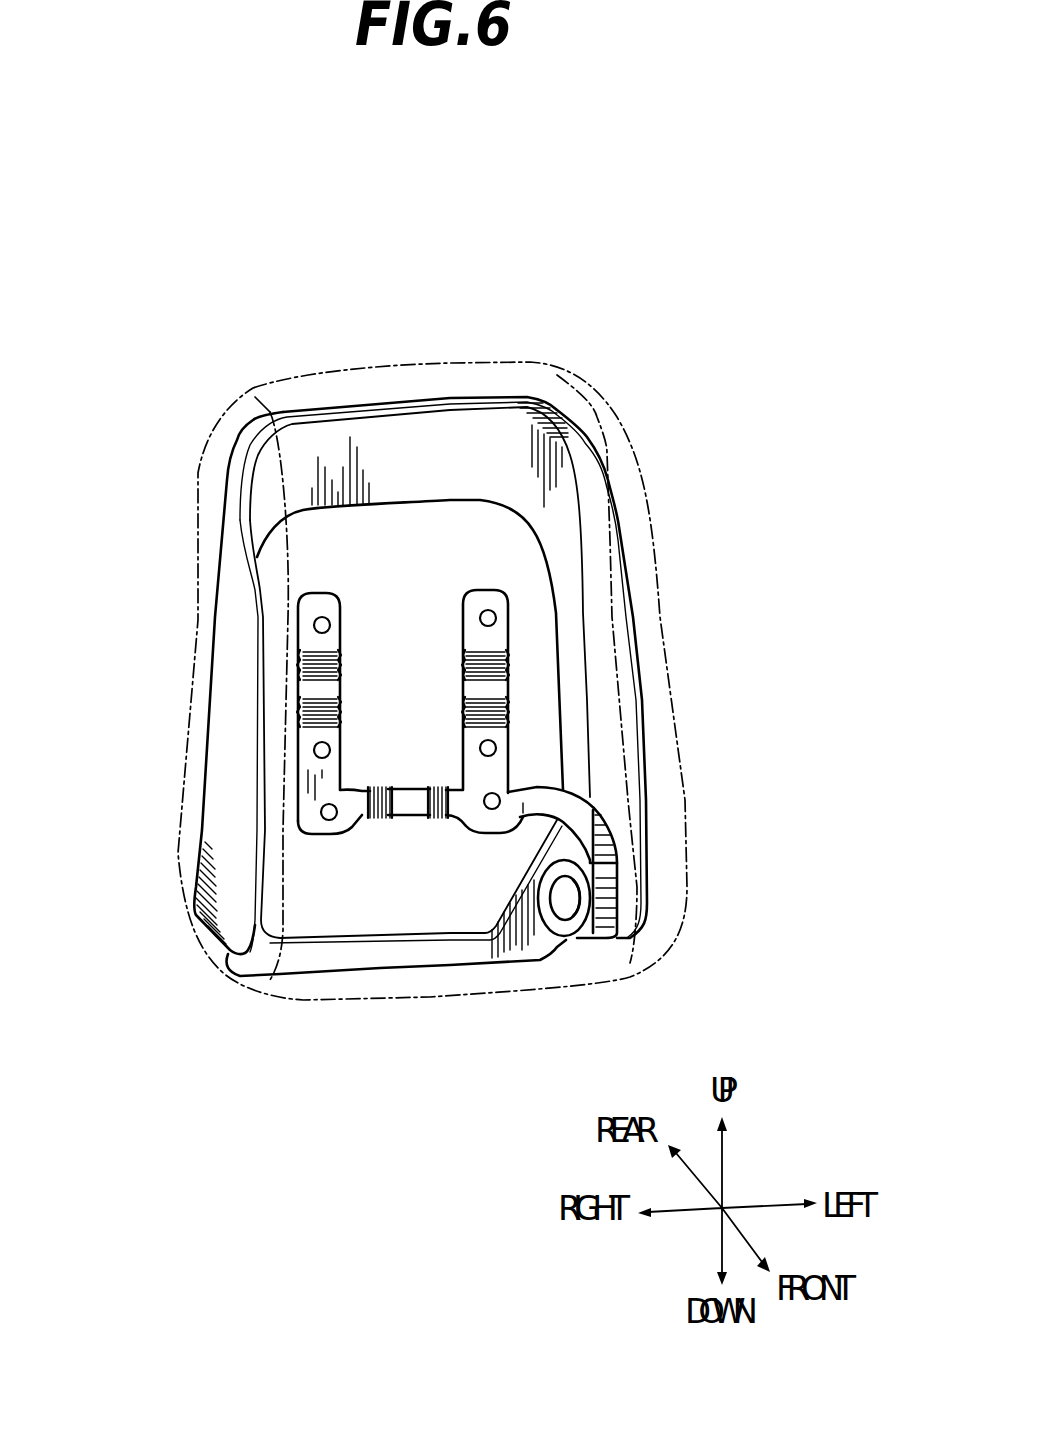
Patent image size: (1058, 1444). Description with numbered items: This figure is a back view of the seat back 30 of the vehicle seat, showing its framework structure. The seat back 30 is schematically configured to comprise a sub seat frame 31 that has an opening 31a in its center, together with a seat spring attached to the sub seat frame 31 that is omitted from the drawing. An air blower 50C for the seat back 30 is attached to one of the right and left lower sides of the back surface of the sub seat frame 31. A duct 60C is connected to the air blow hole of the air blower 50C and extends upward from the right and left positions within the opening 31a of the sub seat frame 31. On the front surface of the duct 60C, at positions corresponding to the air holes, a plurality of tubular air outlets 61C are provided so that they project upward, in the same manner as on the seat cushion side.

The seat back 30 is at (577, 301).
The sub seat frame 31 is at (463, 430).
The opening 31a is at (417, 520).
The duct 60C is at (410, 797).
The tubular air outlets 61C is at (318, 624).
The air blower 50C is at (572, 938).